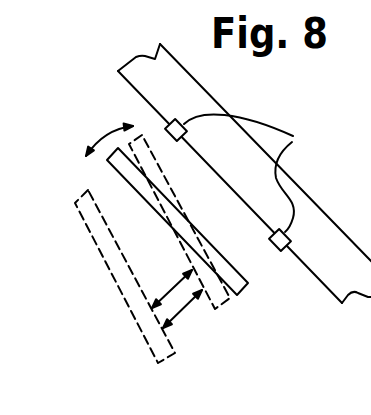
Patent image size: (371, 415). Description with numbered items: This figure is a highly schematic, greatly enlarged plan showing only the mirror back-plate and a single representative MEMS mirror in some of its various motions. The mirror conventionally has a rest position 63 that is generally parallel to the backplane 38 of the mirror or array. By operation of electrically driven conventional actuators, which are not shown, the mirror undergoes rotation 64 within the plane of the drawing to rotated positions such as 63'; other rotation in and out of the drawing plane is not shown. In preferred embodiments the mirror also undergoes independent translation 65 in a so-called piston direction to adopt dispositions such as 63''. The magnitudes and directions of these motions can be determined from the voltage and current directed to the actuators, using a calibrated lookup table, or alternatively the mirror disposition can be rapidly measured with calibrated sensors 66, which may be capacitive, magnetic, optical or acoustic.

The backplane 38 is at (244, 173).
The rest position 63 is at (191, 224).
The rotated position 63' is at (187, 232).
The translated disposition 63'' is at (125, 288).
The rotation 64 is at (105, 138).
The translation 65 is at (177, 299).
The calibrated sensors 66 is at (251, 173).